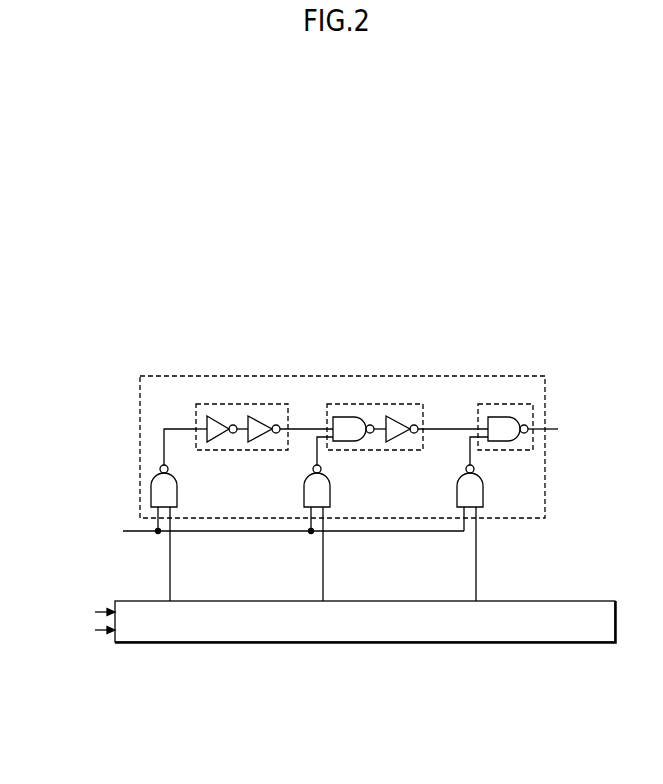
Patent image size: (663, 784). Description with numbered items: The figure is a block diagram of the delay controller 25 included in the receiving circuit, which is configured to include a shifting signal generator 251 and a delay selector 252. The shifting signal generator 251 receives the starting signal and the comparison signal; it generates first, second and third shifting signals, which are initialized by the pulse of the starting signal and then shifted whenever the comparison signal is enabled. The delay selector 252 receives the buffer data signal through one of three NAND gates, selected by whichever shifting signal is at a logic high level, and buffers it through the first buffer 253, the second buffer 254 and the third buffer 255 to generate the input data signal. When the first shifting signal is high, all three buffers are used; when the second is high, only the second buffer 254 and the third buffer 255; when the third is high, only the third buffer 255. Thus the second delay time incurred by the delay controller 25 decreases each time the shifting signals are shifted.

The delay controller 25 is at (591, 295).
The shifting signal generator 251 is at (364, 643).
The delay selector 252 is at (292, 376).
The first buffer 253 is at (236, 404).
The second buffer 254 is at (370, 404).
The third buffer 255 is at (501, 404).